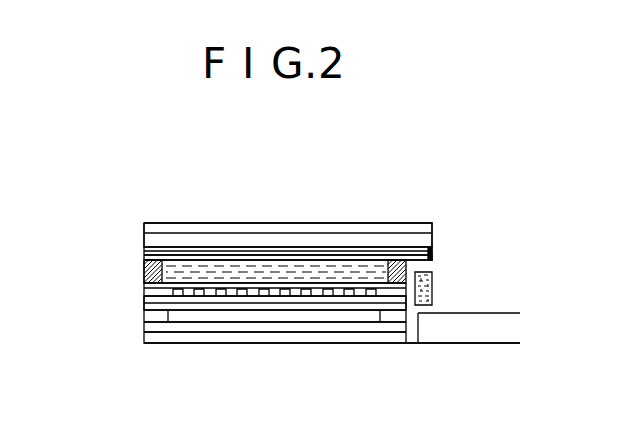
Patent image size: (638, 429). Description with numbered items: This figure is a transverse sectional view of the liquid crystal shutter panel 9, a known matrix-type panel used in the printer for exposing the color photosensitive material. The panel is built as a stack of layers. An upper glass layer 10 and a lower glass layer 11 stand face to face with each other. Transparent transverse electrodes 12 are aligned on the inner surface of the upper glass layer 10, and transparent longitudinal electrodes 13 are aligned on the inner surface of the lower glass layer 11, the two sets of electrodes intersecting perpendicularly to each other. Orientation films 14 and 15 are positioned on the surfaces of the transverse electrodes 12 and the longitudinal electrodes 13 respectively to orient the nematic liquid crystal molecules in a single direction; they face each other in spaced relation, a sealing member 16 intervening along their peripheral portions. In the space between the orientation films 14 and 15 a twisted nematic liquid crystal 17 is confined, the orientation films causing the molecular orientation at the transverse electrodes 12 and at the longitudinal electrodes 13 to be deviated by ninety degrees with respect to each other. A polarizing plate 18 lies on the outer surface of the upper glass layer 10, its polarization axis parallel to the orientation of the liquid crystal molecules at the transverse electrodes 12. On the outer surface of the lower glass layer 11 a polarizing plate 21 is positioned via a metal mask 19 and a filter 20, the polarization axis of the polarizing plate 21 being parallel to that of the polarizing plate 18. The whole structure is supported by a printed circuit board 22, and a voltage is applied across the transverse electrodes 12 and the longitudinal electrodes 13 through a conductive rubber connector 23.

The liquid crystal shutter panel 9 is at (302, 181).
The upper glass layer 10 is at (433, 230).
The lower glass layer 11 is at (173, 295).
The transparent transverse electrodes 12 is at (432, 248).
The transparent longitudinal electrodes 13 is at (143, 306).
The orientation film 14 is at (433, 259).
The orientation film 15 is at (143, 288).
The sealing member 16 is at (143, 268).
The twisted nematic liquid crystal 17 is at (202, 264).
The polarizing plate 18 is at (377, 229).
The metal mask 19 is at (143, 318).
The filter 20 is at (205, 327).
The polarizing plate 21 is at (305, 337).
The printed circuit board 22 is at (450, 335).
The conductive rubber connector 23 is at (434, 290).